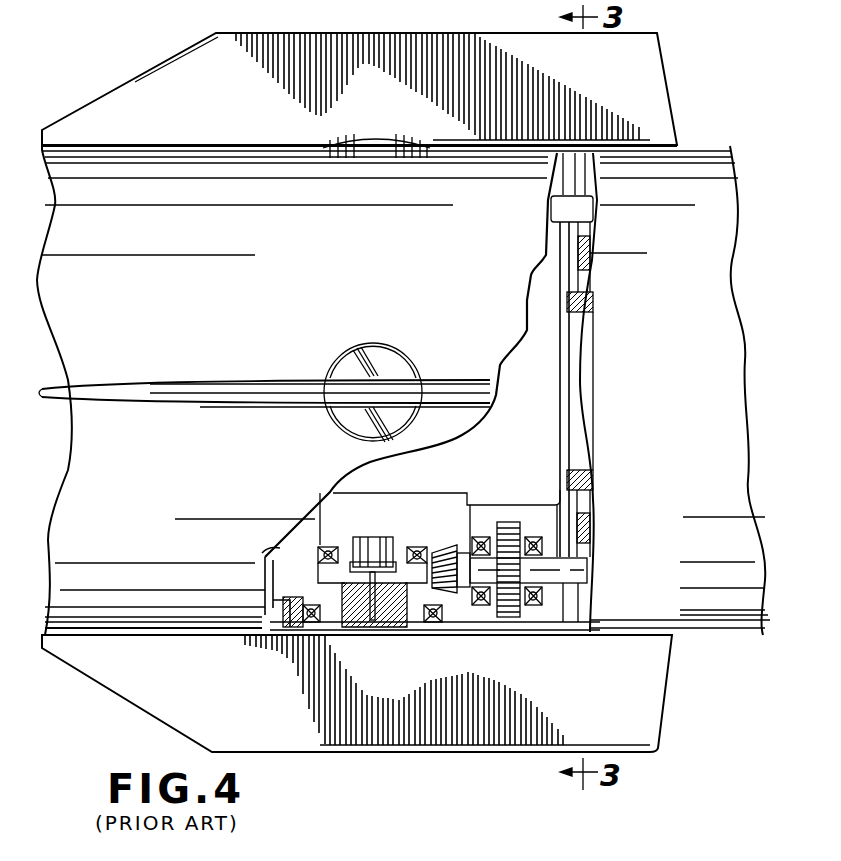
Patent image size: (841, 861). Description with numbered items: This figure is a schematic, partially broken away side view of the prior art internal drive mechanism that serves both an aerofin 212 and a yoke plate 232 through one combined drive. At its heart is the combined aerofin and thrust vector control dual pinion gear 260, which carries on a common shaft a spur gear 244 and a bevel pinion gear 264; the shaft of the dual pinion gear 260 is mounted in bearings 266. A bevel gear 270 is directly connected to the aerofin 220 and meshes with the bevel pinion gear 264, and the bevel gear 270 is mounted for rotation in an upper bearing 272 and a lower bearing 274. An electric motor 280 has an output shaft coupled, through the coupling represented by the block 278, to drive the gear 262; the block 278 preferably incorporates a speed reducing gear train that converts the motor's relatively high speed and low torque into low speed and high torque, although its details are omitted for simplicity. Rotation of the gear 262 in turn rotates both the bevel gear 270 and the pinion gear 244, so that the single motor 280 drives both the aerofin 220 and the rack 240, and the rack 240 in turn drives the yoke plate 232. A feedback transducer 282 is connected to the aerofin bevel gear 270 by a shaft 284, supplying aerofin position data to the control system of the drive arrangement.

The aerofin 212 is at (334, 652).
The aerofin 220 is at (652, 753).
The yoke plate 232 is at (592, 532).
The rack 240 is at (585, 602).
The spur gear 244 is at (588, 573).
The dual pinion gear 260 is at (527, 520).
The gear 262 is at (512, 522).
The bevel pinion gear 264 is at (455, 598).
The bearings 266 is at (480, 607).
The bevel gear 270 is at (400, 631).
The upper bearing 272 is at (324, 545).
The lower bearing 274 is at (440, 623).
The coupling block 278 is at (467, 492).
The electric motor 280 is at (283, 566).
The feedback transducer 282 is at (372, 537).
The shaft 284 is at (362, 628).